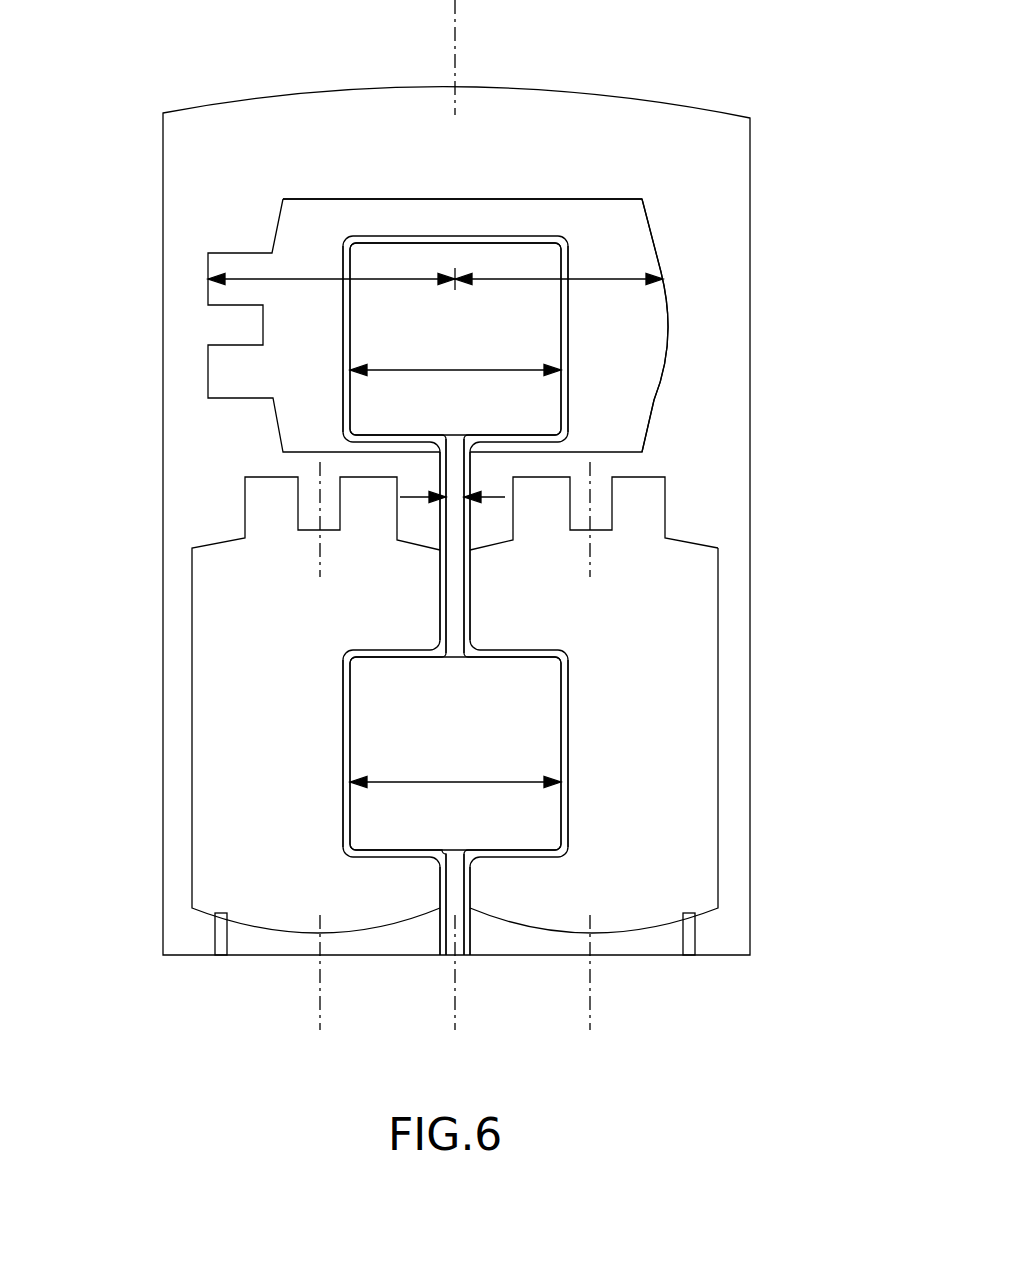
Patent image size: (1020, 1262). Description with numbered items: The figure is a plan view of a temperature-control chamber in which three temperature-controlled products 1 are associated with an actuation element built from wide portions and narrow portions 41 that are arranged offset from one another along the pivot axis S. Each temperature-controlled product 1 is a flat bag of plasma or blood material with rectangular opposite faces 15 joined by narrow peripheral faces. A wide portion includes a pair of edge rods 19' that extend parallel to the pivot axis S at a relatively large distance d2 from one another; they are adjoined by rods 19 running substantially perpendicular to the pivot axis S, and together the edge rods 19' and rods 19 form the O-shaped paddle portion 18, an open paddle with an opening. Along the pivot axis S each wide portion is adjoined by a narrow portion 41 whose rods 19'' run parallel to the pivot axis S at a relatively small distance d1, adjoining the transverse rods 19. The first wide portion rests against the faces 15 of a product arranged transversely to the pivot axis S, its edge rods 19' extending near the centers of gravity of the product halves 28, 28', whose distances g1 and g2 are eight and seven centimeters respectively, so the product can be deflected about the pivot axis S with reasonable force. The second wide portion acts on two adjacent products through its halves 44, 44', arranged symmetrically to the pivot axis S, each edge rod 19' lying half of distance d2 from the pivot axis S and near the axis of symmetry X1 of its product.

The temperature-controlled product 1 is at (420, 213).
The face 15 is at (438, 236).
The first half 28 is at (369, 170).
The second half 28' is at (548, 170).
The rod 19 is at (489, 537).
The edge rod 19' is at (455, 546).
The rod 19'' is at (499, 697).
The O-shaped paddle portion 18 is at (540, 276).
The narrow portion 41 is at (658, 751).
The first half 44 is at (337, 687).
The second half 44' is at (581, 681).
The distance d1 is at (481, 533).
The distance d2 is at (455, 562).
The distance g1 is at (253, 276).
The distance g2 is at (608, 279).
The pivot axis S is at (455, 973).
The axis of symmetry X1 is at (320, 973).